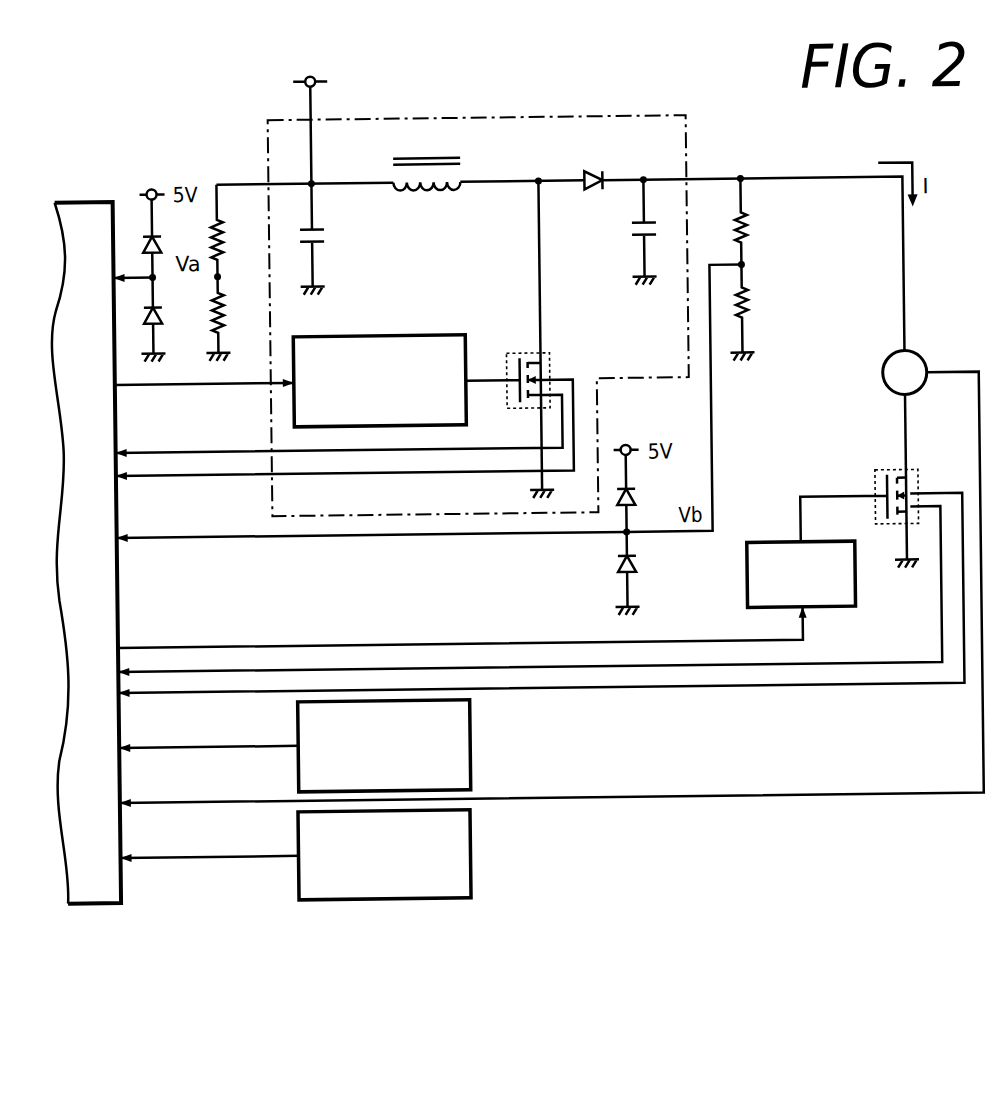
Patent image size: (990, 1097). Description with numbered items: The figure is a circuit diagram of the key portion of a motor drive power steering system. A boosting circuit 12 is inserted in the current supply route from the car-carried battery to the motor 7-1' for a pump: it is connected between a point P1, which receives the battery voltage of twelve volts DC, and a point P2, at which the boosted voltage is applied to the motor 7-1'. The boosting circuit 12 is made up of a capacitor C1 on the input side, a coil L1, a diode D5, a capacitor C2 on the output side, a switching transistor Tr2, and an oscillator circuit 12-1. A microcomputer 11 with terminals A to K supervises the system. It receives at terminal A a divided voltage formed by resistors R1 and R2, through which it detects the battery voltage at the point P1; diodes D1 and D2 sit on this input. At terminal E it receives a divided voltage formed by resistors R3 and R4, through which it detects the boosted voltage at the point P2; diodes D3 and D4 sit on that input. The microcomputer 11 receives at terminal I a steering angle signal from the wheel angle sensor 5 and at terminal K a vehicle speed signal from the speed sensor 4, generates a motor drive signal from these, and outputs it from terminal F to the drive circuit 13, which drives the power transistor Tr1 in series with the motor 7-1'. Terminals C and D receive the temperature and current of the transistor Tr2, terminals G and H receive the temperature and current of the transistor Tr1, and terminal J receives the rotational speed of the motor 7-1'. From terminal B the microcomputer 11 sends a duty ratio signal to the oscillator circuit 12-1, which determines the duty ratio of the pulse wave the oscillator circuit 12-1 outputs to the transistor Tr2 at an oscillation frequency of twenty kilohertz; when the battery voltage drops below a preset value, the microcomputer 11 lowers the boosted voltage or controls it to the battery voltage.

The microcomputer 11 is at (104, 200).
The boosting circuit 12 is at (680, 122).
The oscillator circuit 12-1 is at (446, 341).
The drive circuit 13 is at (830, 551).
The wheel angle sensor 5 is at (470, 712).
The speed sensor 4 is at (469, 822).
The motor for a pump 7-1' is at (930, 357).
The voltage receiving point P1 is at (317, 78).
The voltage applying point P2 is at (748, 184).
The coil L1 is at (438, 157).
The capacitor C1 is at (334, 236).
The capacitor C2 is at (664, 233).
The diode D1 is at (167, 247).
The diode D2 is at (167, 330).
The diode D3 is at (640, 509).
The diode D4 is at (640, 576).
The diode D5 is at (593, 177).
The resistor R1 is at (230, 238).
The resistor R2 is at (230, 319).
The resistor R3 is at (754, 236).
The resistor R4 is at (756, 313).
The power transistor Tr1 is at (920, 492).
The switching transistor Tr2 is at (553, 363).